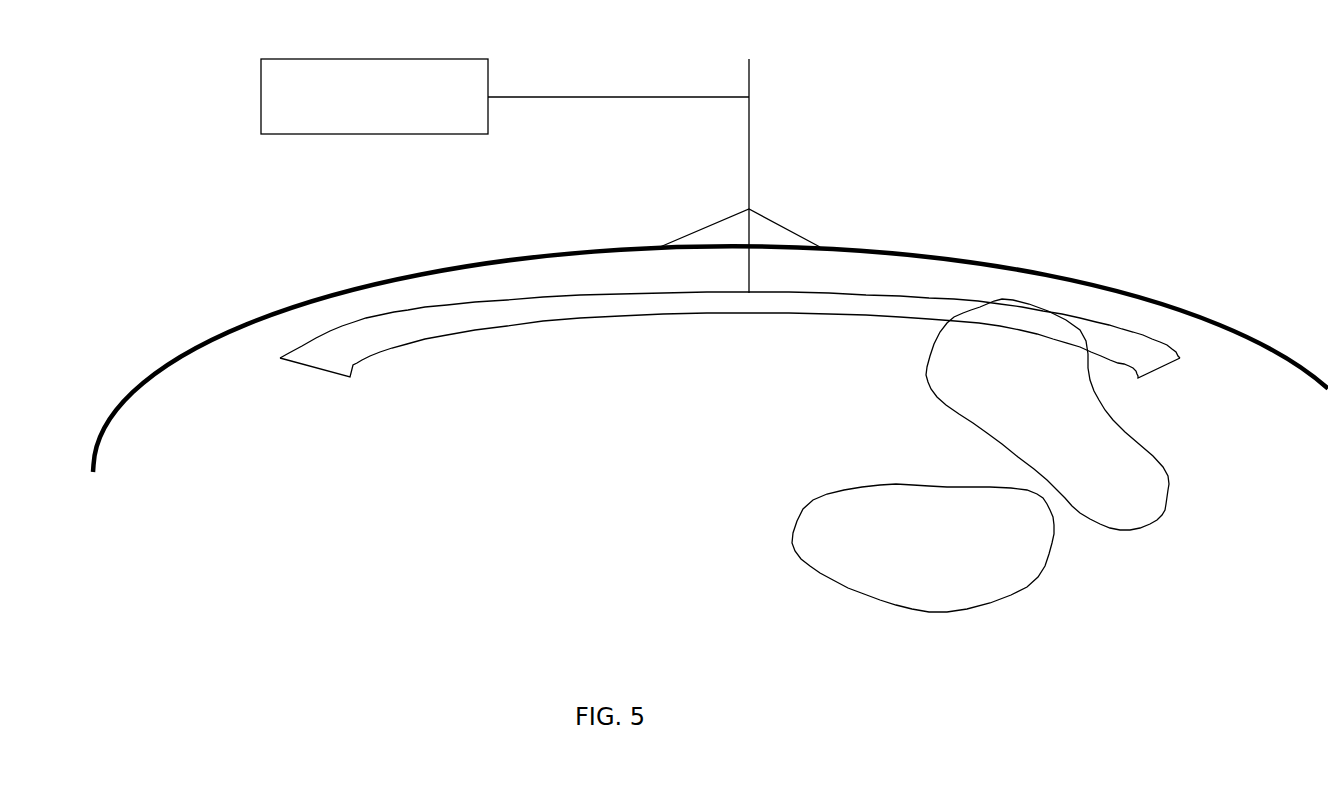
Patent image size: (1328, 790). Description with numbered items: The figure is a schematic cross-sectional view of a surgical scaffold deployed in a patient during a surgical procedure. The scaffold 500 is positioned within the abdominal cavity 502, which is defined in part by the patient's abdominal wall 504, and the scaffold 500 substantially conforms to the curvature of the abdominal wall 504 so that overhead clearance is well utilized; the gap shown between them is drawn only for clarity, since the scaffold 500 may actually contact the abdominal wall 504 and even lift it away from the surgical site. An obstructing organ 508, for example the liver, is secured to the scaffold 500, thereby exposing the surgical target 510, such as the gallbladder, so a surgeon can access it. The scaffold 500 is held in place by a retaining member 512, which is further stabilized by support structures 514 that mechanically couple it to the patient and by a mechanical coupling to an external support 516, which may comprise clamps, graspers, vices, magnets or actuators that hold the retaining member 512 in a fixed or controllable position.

The scaffold 500 is at (452, 333).
The abdominal cavity 502 is at (463, 447).
The abdominal wall 504 is at (300, 305).
The obstructing organ 508 is at (1047, 414).
The surgical target 510 is at (923, 548).
The retaining member 512 is at (751, 75).
The support structures 514 is at (695, 232).
The external support 516 is at (488, 59).